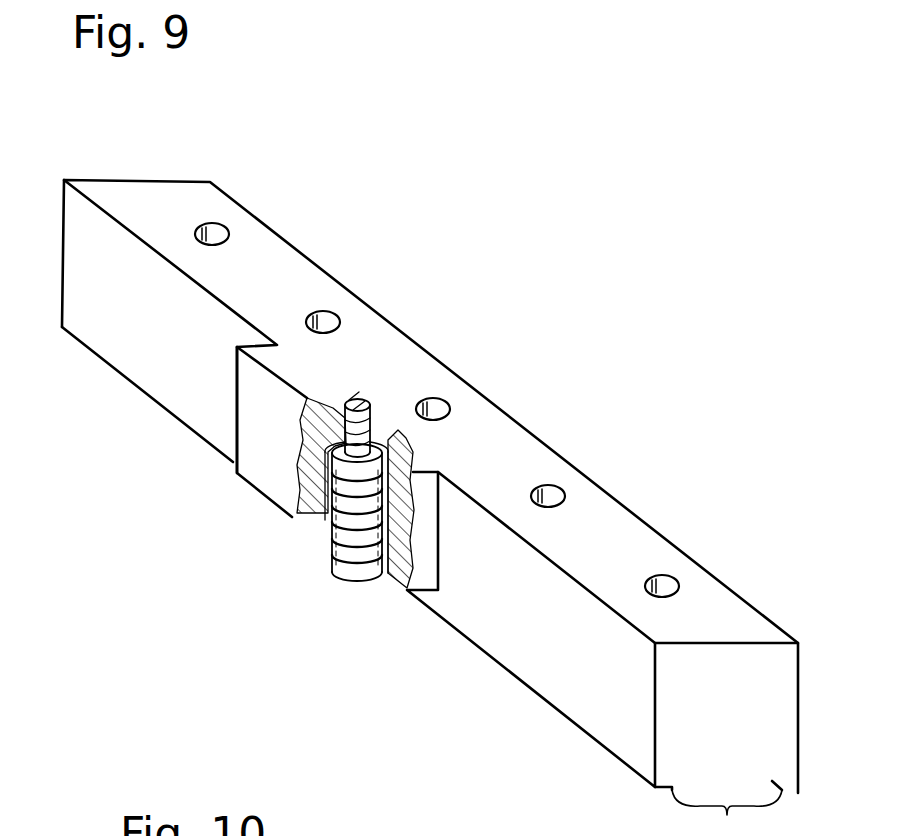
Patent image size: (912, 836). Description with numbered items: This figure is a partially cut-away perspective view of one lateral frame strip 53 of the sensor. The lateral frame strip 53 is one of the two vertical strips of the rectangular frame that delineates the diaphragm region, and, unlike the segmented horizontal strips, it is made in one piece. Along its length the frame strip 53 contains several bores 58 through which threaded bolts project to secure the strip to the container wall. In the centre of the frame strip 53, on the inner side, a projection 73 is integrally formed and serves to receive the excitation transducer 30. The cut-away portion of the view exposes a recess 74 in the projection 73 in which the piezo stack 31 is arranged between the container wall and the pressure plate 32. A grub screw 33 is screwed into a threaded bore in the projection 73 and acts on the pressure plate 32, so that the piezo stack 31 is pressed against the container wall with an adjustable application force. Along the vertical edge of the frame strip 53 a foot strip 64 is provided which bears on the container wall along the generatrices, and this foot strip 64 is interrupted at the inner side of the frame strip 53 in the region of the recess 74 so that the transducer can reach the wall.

The lateral frame strip 53 is at (147, 185).
The bores 58 is at (227, 230).
The projection 73 is at (255, 420).
The recess 74 is at (303, 475).
The excitation transducer 30 is at (331, 492).
The piezo stack 31 is at (347, 542).
The pressure plate 32 is at (348, 478).
The grub screw 33 is at (356, 400).
The foot strip 64 is at (718, 808).